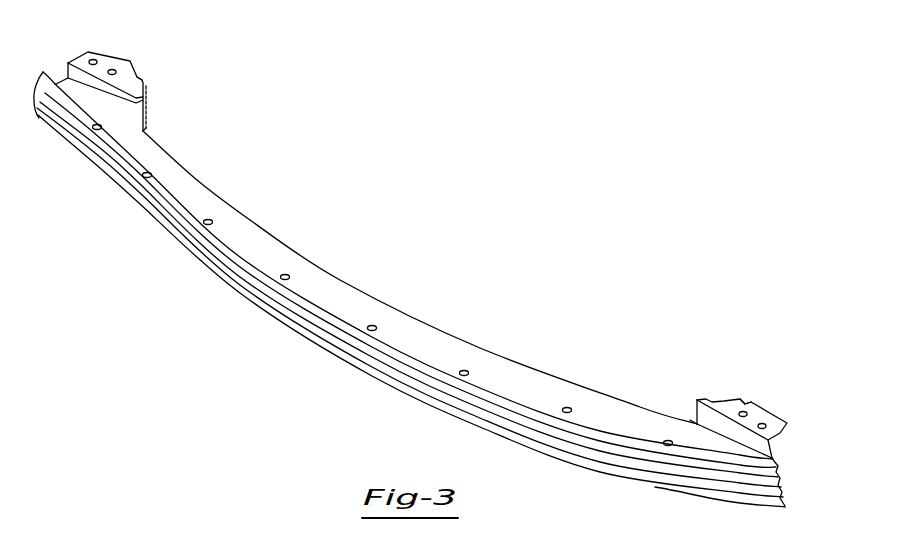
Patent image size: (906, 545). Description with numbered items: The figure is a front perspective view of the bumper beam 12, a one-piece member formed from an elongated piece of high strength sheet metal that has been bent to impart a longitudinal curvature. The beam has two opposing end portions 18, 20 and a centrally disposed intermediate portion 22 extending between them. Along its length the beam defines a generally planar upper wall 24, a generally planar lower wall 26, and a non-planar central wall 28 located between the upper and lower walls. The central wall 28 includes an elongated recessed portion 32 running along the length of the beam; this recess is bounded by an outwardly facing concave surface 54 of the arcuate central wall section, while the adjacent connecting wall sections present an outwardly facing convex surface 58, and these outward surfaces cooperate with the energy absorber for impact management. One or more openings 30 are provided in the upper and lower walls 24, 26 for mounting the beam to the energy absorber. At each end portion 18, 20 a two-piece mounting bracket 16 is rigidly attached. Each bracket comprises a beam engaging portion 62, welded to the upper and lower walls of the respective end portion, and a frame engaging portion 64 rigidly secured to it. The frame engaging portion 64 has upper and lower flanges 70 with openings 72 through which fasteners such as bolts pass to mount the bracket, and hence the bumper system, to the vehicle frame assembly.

The bumper beam 12 is at (513, 197).
The mounting bracket 16 is at (143, 84).
The end portion 18 is at (44, 72).
The end portion 20 is at (774, 458).
The intermediate portion 22 is at (434, 327).
The upper wall 24 is at (348, 300).
The lower wall 26 is at (345, 356).
The central wall 28 is at (424, 383).
The openings 30 is at (567, 408).
The elongated recessed portion 32 is at (392, 361).
The outwardly facing concave surface 54 is at (295, 305).
The outwardly facing convex surface 58 is at (255, 268).
The beam engaging portion 62 is at (141, 116).
The frame engaging portion 64 is at (137, 76).
The upper and lower flanges 70 is at (91, 59).
The openings 72 is at (113, 68).